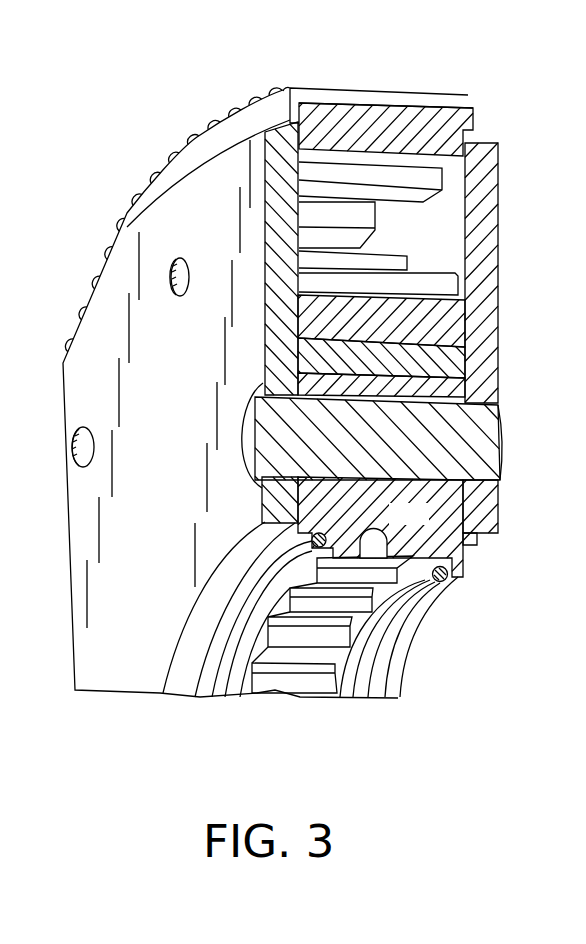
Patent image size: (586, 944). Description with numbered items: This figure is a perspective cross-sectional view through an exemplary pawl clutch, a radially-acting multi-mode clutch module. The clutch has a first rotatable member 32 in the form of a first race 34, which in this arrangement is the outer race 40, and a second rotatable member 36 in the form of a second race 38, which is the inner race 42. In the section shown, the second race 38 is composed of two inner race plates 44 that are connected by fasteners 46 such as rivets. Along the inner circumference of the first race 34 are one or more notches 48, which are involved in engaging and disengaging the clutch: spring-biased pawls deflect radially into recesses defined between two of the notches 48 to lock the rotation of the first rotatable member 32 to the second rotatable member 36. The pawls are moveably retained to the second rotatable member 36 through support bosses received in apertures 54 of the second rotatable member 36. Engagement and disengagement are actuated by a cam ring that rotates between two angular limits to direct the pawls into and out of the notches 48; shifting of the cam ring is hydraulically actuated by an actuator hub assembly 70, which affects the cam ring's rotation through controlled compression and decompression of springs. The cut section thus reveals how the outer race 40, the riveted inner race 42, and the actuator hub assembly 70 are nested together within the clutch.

The first rotatable member 32 is at (328, 112).
The first race 34 is at (390, 112).
The outer race 40 is at (443, 118).
The second rotatable member 36 is at (483, 190).
The second race 38 is at (298, 243).
The inner race 42 is at (488, 297).
The inner race plates 44 is at (488, 335).
The fasteners 46 is at (475, 445).
The notches 48 is at (430, 177).
The apertures 54 is at (170, 273).
The actuator hub assembly 70 is at (425, 524).